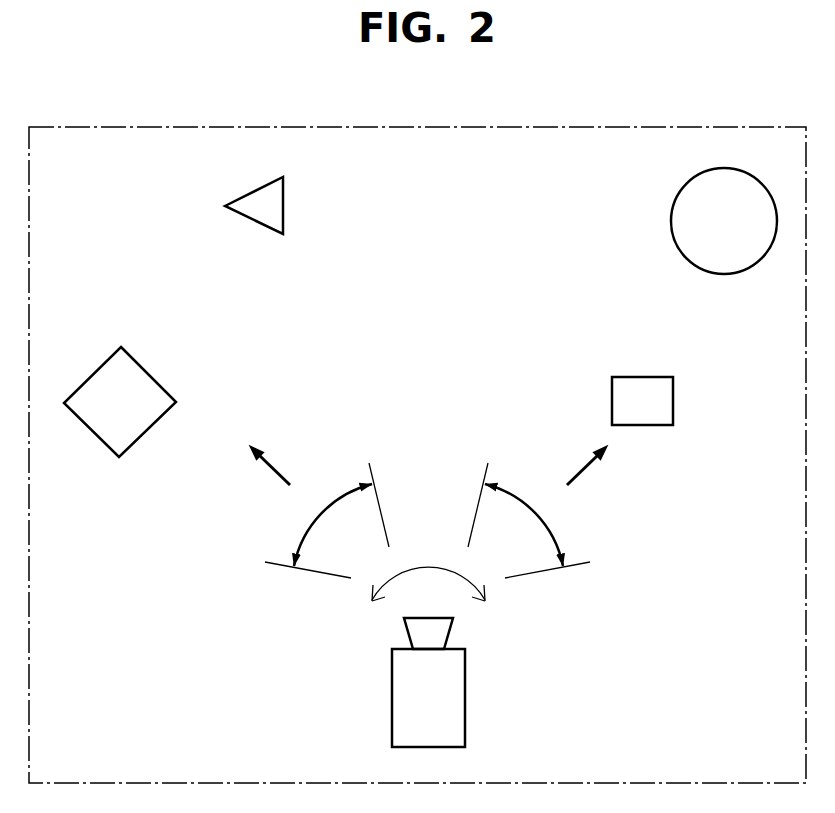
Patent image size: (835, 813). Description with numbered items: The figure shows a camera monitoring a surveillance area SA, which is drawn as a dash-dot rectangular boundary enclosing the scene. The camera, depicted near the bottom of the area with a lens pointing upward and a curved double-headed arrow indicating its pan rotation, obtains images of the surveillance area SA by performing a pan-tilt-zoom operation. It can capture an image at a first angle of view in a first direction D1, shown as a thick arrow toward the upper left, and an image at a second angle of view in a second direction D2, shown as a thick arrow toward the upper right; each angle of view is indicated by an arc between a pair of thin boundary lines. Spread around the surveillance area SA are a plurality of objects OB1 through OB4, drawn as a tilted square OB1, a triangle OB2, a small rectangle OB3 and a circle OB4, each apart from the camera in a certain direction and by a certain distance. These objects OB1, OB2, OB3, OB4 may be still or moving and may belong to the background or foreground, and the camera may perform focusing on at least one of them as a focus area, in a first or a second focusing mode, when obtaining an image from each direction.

The surveillance area SA is at (730, 127).
The first object OB1 is at (148, 374).
The second object OB2 is at (283, 207).
The third object OB3 is at (673, 402).
The fourth object OB4 is at (670, 221).
The first direction D1 is at (262, 470).
The second direction D2 is at (595, 470).